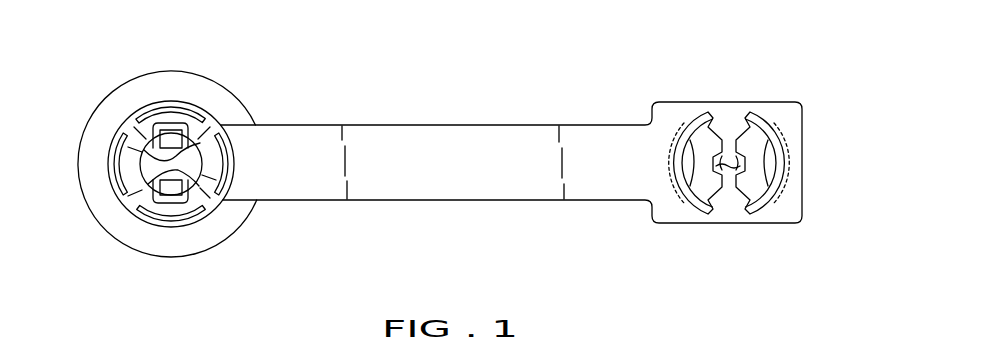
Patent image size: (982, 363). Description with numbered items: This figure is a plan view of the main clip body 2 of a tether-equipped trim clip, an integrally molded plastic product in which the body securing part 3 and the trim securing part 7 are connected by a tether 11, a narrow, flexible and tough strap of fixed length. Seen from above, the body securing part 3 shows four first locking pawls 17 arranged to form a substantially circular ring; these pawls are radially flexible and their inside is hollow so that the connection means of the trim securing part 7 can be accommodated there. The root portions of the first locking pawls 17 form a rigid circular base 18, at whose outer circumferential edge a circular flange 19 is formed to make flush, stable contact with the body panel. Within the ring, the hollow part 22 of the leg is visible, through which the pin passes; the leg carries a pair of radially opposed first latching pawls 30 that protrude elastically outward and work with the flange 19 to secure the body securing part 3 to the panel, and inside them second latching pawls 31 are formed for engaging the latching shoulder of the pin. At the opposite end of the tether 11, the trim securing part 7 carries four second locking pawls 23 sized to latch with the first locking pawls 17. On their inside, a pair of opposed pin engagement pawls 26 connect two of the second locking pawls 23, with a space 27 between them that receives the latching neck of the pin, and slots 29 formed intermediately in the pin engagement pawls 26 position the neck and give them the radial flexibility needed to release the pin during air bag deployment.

The main clip body 2 is at (550, 62).
The body securing part 3 is at (230, 78).
The trim securing part 7 is at (762, 92).
The tether 11 is at (410, 124).
The first locking pawls 17 is at (147, 116).
The base 18 is at (140, 186).
The flange 19 is at (80, 141).
The hollow part 22 is at (198, 142).
The second locking pawls 23 is at (688, 130).
The pin engagement pawls 26 is at (731, 180).
The space 27 is at (728, 160).
The slots 29 is at (745, 177).
The first latching pawls 30 is at (168, 122).
The second latching pawls 31 is at (150, 142).